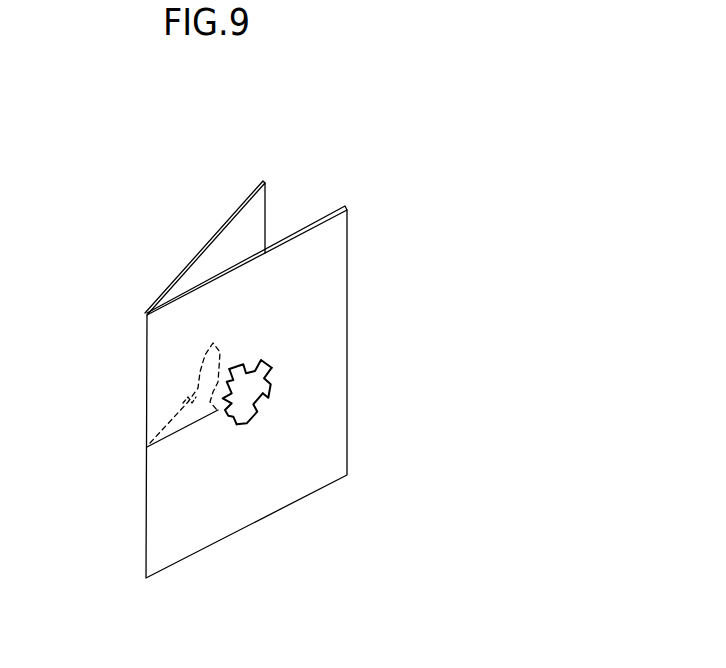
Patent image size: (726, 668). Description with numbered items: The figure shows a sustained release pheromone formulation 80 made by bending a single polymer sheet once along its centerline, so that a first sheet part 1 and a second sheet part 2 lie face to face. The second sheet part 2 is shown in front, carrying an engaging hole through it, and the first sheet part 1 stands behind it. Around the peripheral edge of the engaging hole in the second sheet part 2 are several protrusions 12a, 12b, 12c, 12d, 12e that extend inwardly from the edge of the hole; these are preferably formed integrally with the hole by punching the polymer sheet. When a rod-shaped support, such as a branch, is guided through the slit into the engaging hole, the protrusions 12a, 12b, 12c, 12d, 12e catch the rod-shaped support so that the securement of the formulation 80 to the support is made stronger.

The folded card / greeting card 80 is at (137, 203).
The first sheet part 1 is at (242, 235).
The second sheet part 2 is at (325, 262).
The folded flap of cutout 12a is at (228, 382).
The upper edge of cutout 12b is at (250, 362).
The right edge of cutout 12c is at (270, 382).
The lower edge of cutout 12d is at (255, 420).
The left edge of cutout 12e is at (230, 420).